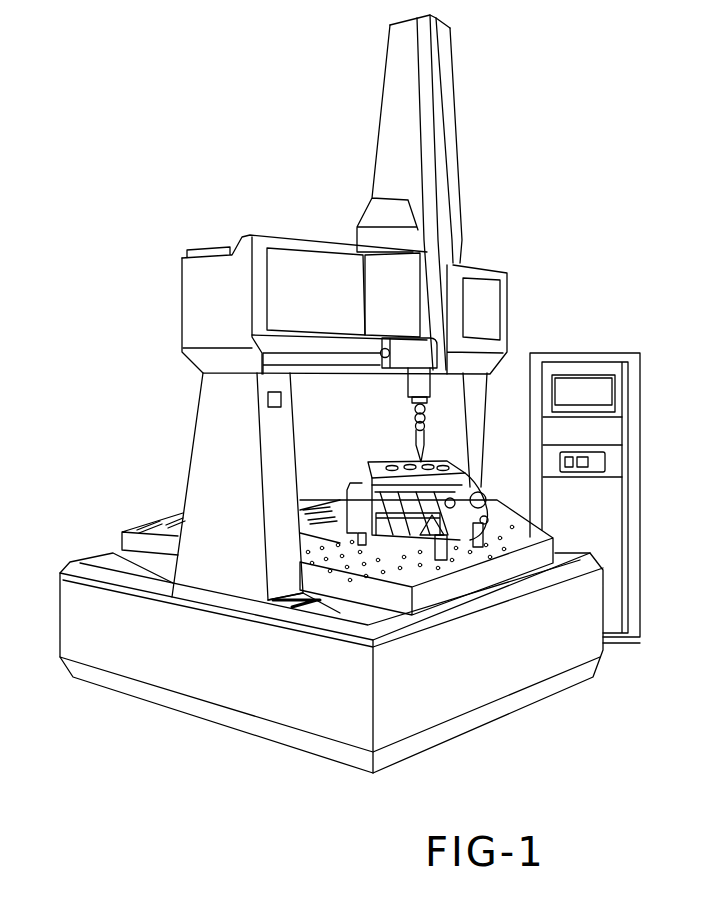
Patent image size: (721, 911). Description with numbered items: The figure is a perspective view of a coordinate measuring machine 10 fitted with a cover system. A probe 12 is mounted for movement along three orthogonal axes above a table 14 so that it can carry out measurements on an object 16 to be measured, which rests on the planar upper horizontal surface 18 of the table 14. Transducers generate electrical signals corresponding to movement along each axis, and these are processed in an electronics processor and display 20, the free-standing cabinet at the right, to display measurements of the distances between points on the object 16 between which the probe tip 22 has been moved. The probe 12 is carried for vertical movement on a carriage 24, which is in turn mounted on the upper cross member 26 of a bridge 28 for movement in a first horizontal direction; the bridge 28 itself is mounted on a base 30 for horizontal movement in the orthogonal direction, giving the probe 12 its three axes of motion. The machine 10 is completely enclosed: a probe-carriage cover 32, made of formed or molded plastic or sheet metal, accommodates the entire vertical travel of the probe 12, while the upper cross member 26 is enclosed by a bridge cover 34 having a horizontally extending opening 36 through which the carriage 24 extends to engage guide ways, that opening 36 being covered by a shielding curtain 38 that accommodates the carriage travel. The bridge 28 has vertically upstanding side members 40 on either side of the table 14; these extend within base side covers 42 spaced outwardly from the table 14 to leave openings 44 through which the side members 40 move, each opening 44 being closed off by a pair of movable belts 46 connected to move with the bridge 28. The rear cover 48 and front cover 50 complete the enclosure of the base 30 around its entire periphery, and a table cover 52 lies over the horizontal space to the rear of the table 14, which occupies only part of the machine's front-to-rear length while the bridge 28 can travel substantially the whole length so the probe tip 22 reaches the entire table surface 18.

The coordinate measuring machine 10 is at (132, 440).
The probe 12 is at (405, 388).
The table 14 is at (485, 581).
The object to be measured 16 is at (352, 486).
The planar upper horizontal surface 18 is at (376, 564).
The electronics processor and display 20 is at (642, 446).
The probe tip 22 is at (425, 452).
The carriage 24 is at (445, 285).
The upper cross member 26 is at (344, 335).
The bridge 28 is at (195, 398).
The base 30 is at (513, 677).
The probe-carriage cover 32 is at (382, 294).
The bridge cover 34 is at (202, 313).
The horizontally extending opening 36 is at (300, 253).
The shielding curtain 38 is at (296, 296).
The side members 40 is at (216, 514).
The base side covers 42 is at (137, 638).
The openings 44 is at (307, 610).
The movable belts 46 is at (345, 612).
The rear cover 48 is at (95, 557).
The front cover 50 is at (421, 678).
The table cover 52 is at (160, 530).